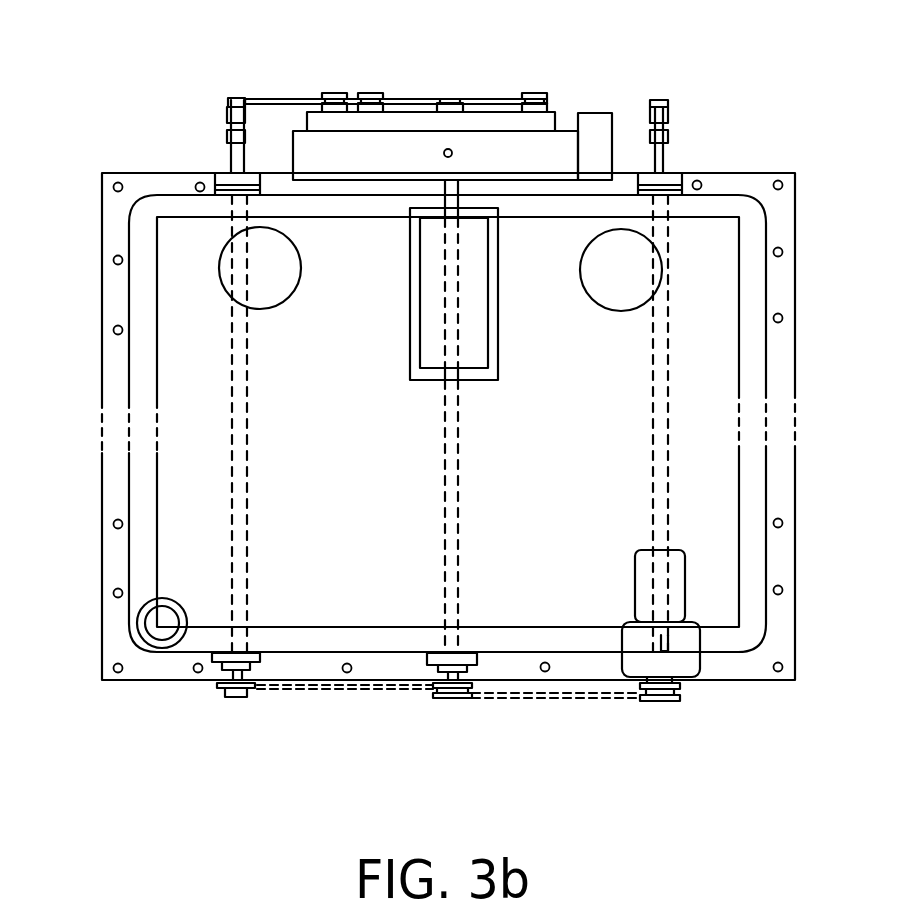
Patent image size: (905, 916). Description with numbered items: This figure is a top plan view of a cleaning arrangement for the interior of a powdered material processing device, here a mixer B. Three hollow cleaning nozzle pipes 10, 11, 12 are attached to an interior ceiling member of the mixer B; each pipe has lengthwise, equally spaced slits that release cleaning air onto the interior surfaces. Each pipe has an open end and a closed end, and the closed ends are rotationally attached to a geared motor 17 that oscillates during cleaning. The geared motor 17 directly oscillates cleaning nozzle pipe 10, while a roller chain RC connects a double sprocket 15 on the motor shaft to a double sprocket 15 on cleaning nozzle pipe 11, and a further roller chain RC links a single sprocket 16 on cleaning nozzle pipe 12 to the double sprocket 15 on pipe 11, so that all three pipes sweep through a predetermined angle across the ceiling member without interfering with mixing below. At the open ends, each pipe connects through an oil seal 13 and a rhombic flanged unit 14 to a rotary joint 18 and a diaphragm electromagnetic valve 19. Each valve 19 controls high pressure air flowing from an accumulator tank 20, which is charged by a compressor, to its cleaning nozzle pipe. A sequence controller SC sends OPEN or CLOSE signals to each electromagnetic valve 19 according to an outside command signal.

The mixer B is at (112, 540).
The cleaning nozzle pipe 10 is at (668, 356).
The cleaning nozzle pipe 11 is at (458, 505).
The cleaning nozzle pipe 12 is at (232, 398).
The oil seal 13 is at (222, 195).
The rhombic flanged unit 14 is at (222, 173).
The double sprocket 15 is at (452, 697).
The single sprocket 16 is at (237, 697).
The geared motor 17 is at (678, 640).
The rotary joint 18 is at (228, 118).
The diaphragm electromagnetic valve 19 is at (330, 93).
The accumulator tank 20 is at (397, 160).
The sequence controller SC is at (605, 135).
The roller chain RC is at (545, 698).